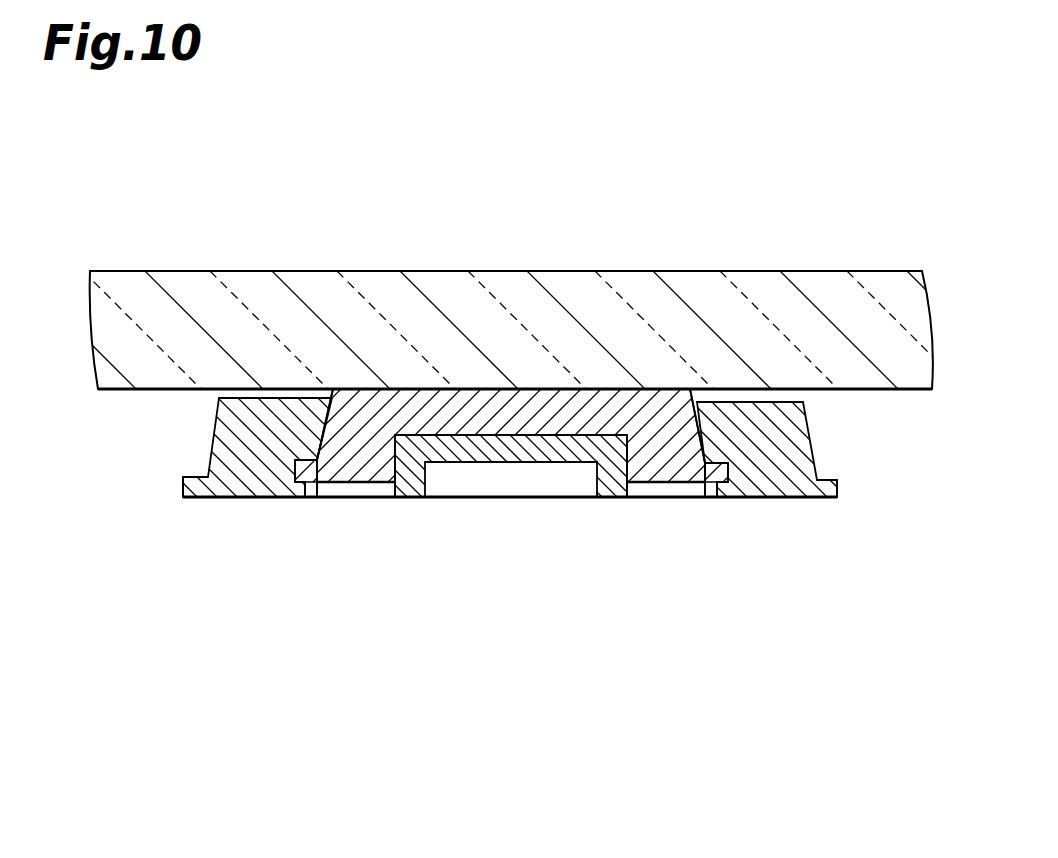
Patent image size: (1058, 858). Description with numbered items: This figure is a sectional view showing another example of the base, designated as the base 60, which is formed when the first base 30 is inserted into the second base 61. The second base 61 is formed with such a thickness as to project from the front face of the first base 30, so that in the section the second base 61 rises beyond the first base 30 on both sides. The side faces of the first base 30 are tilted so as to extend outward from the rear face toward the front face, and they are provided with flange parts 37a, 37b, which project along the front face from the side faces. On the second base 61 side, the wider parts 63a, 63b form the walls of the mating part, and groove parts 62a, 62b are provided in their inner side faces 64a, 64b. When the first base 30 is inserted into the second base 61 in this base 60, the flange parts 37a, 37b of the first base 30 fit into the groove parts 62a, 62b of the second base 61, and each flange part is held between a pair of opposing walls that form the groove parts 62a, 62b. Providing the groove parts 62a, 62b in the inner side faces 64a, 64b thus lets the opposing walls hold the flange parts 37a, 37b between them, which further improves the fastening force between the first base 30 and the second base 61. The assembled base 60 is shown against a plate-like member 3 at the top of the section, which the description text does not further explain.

The transparent plate 3 is at (889, 400).
The first base 30 is at (525, 380).
The flange part 37a is at (717, 483).
The flange part 37b is at (309, 483).
The base 60 is at (134, 598).
The second base 61 is at (251, 505).
The groove part 62a is at (712, 473).
The groove part 62b is at (312, 472).
The wider part 63a is at (740, 433).
The wider part 63b is at (267, 418).
The inner side face 64a is at (687, 432).
The inner side face 64b is at (332, 428).